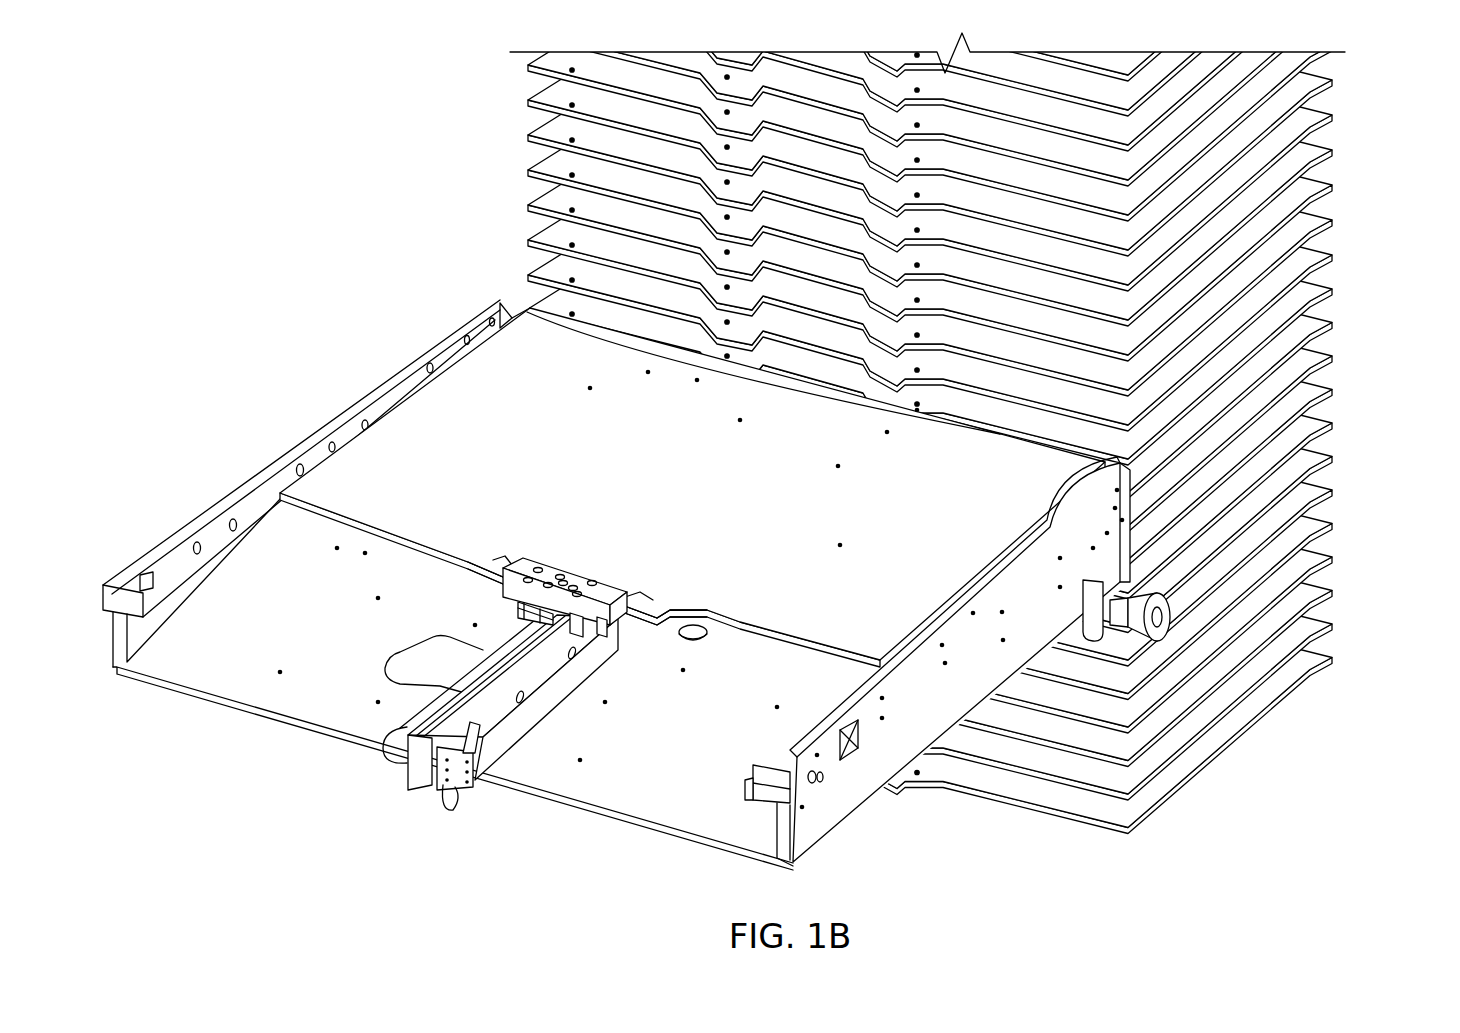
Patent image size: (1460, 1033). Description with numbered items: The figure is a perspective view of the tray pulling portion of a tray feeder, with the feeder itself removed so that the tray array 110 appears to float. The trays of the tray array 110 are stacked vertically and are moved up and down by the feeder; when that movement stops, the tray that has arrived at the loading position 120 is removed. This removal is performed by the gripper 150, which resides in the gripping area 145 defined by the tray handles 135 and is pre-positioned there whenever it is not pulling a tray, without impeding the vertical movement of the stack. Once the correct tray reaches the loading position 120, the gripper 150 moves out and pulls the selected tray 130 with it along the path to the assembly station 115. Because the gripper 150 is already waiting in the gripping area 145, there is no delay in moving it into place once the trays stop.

The tray array 110 is at (866, 417).
The path to the assembly station 115 is at (633, 556).
The loading position 120 is at (982, 209).
The selected tray 130 is at (601, 487).
The tray handles 135 is at (466, 555).
The gripping area 145 is at (465, 392).
The gripper 150 is at (461, 412).